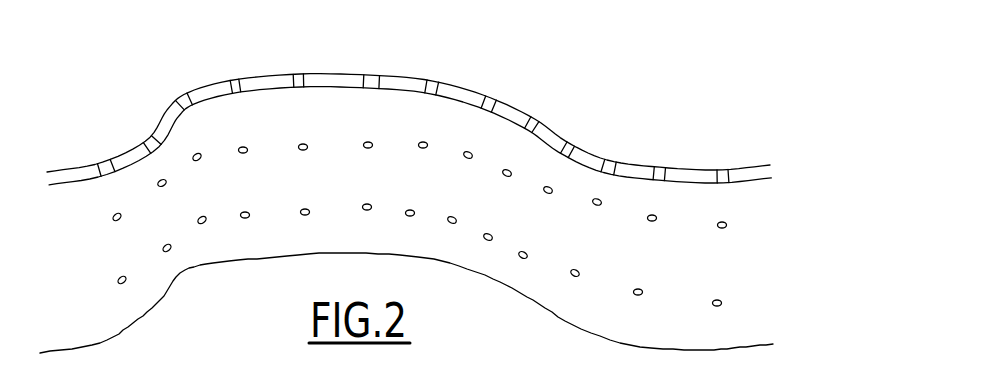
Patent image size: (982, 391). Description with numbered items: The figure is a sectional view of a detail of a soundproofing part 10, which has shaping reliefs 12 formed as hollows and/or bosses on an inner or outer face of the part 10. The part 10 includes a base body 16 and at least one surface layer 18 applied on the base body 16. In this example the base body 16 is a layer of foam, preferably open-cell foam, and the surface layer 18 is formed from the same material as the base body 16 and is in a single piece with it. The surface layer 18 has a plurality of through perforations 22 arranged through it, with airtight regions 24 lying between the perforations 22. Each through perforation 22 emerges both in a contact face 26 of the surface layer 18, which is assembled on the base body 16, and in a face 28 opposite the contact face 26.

The soundproofing part 10 is at (722, 43).
The shaping reliefs 12 is at (210, 311).
The base body 16 is at (766, 275).
The surface layer 18 is at (643, 134).
The through perforations 22 is at (300, 73).
The airtight regions 24 is at (340, 82).
The contact face 26 is at (462, 112).
The opposite face 28 is at (567, 130).